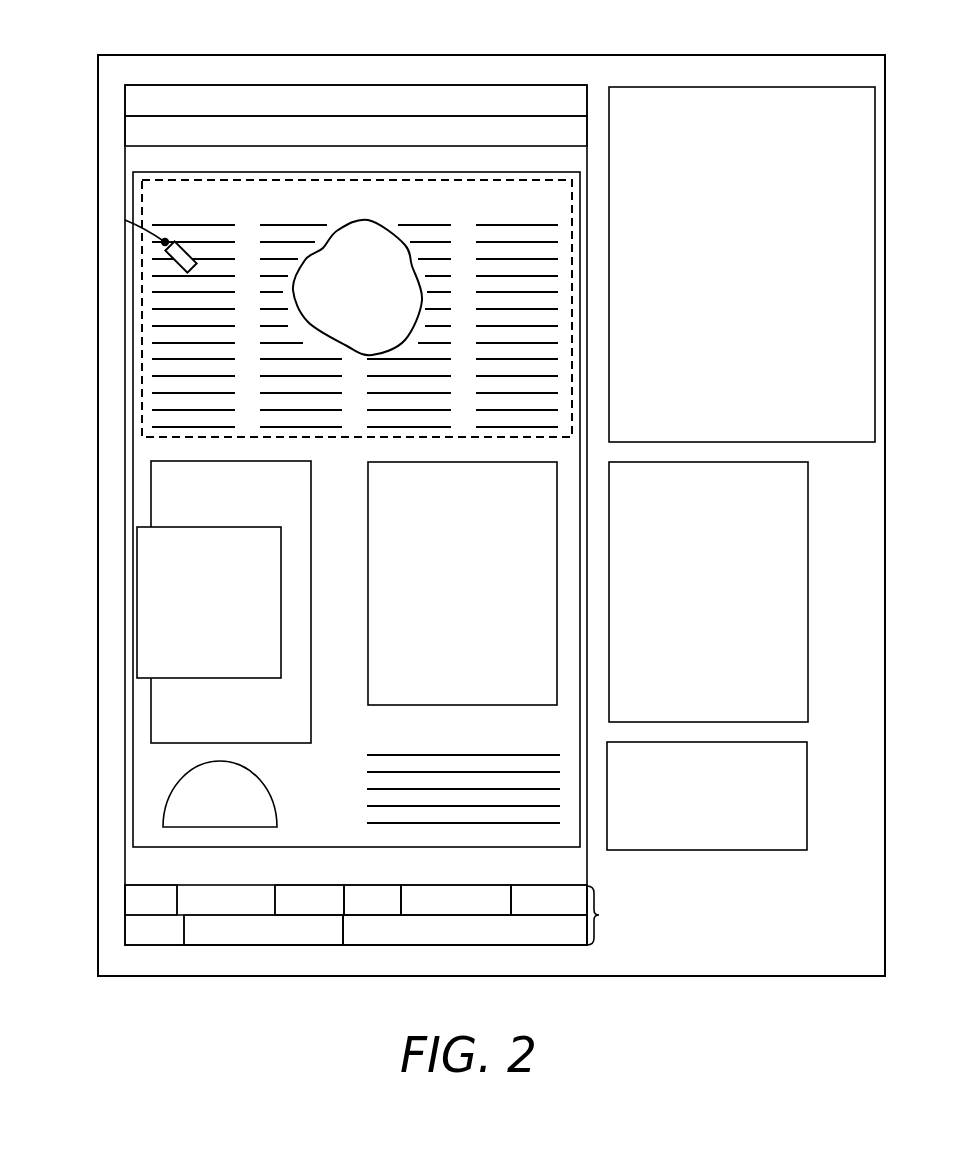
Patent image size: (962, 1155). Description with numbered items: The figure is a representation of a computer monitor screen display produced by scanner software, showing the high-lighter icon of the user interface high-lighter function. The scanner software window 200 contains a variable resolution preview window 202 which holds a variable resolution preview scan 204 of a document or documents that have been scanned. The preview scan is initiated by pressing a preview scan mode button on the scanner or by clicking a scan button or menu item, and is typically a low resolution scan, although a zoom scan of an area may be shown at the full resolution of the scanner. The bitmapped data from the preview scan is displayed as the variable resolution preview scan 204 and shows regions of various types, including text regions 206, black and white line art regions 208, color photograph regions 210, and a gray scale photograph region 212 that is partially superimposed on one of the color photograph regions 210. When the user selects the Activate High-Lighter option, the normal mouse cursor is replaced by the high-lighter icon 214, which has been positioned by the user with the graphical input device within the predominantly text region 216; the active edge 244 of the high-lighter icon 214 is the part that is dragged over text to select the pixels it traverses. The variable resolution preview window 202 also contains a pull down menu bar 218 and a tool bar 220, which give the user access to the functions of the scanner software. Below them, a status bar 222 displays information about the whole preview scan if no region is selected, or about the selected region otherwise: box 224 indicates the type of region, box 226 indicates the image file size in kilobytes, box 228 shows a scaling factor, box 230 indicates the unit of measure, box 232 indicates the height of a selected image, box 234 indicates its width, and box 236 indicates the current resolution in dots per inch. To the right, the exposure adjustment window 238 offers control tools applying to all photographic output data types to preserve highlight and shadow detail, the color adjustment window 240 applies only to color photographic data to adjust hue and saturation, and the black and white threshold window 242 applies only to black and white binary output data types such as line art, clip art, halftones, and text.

The scanner software window 200 is at (456, 55).
The variable resolution preview window 202 is at (123, 313).
The variable resolution preview scan 204 is at (340, 172).
The text regions 206 is at (158, 225).
The black and white line art regions 208 is at (368, 630).
The color photograph regions 210 is at (378, 207).
The gray scale photograph region 212 is at (230, 527).
The high-lighter icon 214 is at (195, 237).
The predominantly text region 216 is at (572, 317).
The pull down menu bar 218 is at (125, 103).
The tool bar 220 is at (125, 133).
The status bar 222 is at (598, 915).
The box 224 is at (255, 945).
The box 226 is at (430, 945).
The box 228 is at (580, 884).
The box 230 is at (480, 884).
The box 232 is at (390, 884).
The box 234 is at (310, 884).
The box 236 is at (140, 885).
The exposure adjustment window 238 is at (817, 442).
The color adjustment window 240 is at (808, 600).
The black and white threshold window 242 is at (809, 812).
The active edge 244 is at (125, 220).